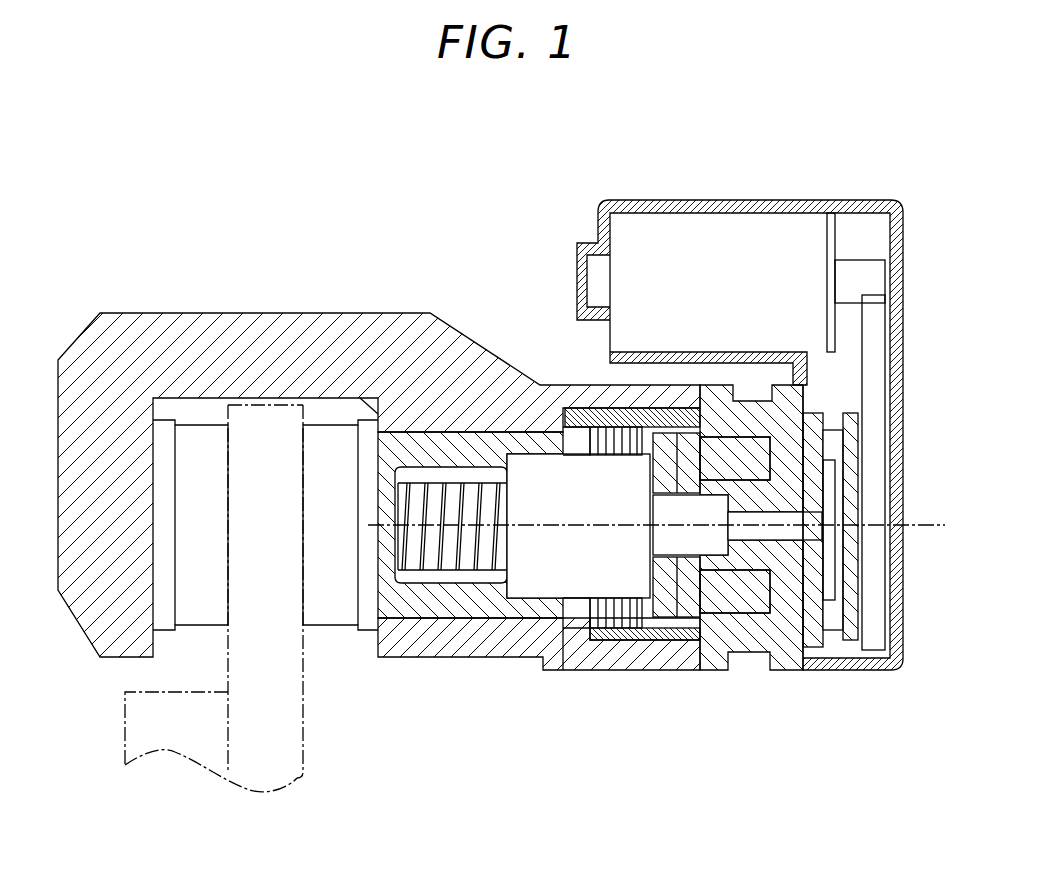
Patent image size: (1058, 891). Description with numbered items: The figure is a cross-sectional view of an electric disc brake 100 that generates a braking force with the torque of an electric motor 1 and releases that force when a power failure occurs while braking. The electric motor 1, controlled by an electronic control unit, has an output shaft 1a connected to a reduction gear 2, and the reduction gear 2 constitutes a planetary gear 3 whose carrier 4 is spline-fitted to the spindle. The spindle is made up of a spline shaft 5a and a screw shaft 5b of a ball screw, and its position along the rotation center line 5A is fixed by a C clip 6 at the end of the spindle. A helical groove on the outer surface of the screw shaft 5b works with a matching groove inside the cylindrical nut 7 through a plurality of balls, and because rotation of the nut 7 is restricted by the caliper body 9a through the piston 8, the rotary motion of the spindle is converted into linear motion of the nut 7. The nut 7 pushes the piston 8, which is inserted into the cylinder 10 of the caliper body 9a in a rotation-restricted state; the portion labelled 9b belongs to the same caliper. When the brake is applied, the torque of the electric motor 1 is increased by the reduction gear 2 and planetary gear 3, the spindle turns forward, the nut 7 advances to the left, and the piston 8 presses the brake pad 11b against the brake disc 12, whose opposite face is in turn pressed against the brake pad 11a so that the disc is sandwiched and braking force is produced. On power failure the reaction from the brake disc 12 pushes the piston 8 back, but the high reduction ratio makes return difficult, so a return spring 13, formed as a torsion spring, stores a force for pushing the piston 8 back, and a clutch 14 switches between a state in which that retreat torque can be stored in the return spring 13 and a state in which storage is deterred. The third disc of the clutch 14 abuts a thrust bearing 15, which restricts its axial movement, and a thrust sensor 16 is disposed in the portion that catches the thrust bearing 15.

The electric disc brake 100 is at (97, 268).
The electric motor 1 is at (657, 232).
The output shaft 1a is at (835, 283).
The reduction gear 2 is at (873, 357).
The planetary gear 3 is at (853, 507).
The carrier 4 is at (773, 562).
The spline shaft 5a is at (710, 537).
The screw shaft 5b is at (480, 553).
The rotation center line 5A is at (930, 533).
The C clip 6 is at (817, 548).
The nut 7 is at (540, 473).
The piston 8 is at (408, 447).
The caliper body 9a is at (462, 350).
The housing plate 9b is at (578, 398).
The cylinder 10 is at (422, 613).
The brake pad 11a is at (200, 442).
The brake pad 11b is at (335, 442).
The brake disc 12 is at (268, 770).
The return spring 13 is at (603, 627).
The clutch 14 is at (675, 640).
The thrust bearing 15 is at (703, 455).
The thrust sensor 16 is at (740, 450).